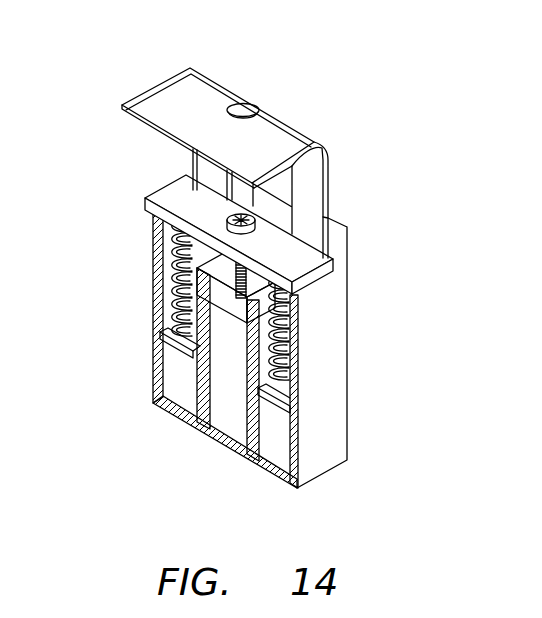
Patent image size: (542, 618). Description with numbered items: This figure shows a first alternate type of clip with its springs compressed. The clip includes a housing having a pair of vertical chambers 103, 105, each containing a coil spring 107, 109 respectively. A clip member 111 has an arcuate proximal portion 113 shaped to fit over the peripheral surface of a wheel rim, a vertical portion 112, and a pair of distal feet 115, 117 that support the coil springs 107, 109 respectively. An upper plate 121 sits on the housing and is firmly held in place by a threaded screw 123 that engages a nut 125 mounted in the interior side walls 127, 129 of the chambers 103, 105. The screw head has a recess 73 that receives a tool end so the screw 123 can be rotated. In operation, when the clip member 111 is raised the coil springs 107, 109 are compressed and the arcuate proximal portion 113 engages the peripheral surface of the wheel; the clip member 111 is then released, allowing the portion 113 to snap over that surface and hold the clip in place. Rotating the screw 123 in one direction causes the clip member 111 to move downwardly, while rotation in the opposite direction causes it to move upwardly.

The recess 73 is at (243, 103).
The vertical chamber 103 is at (258, 465).
The vertical chamber 105 is at (178, 405).
The coil spring 107 is at (292, 343).
The coil spring 109 is at (177, 268).
The clip member 111 is at (330, 177).
The vertical portion 112 is at (308, 202).
The arcuate proximal portion 113 is at (275, 138).
The distal foot 115 is at (268, 410).
The distal foot 117 is at (172, 347).
The upper plate 121 is at (290, 254).
The threaded screw 123 is at (188, 176).
The nut 125 is at (205, 313).
The interior side wall 127 is at (250, 380).
The interior side wall 129 is at (203, 365).